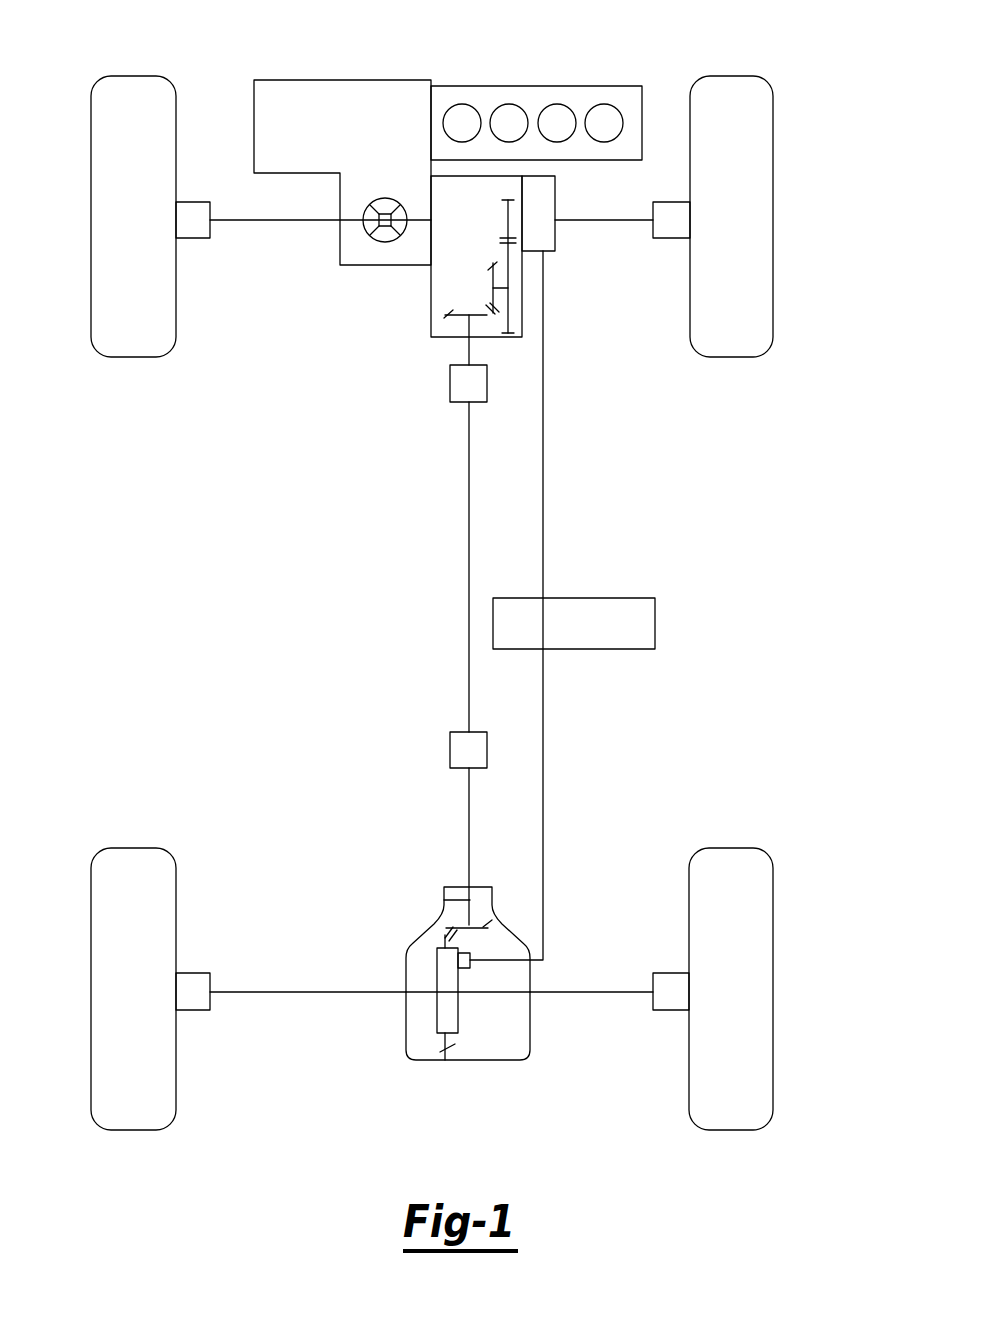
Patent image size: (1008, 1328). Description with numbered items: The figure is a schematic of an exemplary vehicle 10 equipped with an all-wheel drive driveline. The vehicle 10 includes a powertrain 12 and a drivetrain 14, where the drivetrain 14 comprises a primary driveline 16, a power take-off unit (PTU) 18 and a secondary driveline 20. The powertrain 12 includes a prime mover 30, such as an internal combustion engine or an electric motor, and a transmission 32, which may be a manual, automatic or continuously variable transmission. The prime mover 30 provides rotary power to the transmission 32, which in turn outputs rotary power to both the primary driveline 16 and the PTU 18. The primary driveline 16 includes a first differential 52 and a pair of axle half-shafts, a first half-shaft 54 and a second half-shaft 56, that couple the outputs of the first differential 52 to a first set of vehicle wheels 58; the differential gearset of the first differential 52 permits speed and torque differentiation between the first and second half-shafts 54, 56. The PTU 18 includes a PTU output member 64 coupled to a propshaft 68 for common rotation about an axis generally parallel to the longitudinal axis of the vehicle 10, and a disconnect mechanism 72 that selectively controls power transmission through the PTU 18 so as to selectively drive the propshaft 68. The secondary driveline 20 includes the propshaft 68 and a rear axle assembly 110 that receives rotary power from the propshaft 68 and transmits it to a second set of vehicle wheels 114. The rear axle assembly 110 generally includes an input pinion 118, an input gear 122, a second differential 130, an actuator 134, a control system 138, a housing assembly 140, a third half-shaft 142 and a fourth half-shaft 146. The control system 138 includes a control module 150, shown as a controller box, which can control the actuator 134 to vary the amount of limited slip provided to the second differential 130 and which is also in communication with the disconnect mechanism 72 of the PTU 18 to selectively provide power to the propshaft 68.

The vehicle 10 is at (784, 577).
The powertrain 12 is at (536, 60).
The drivetrain 14 is at (400, 568).
The primary driveline 16 is at (316, 272).
The power take-off unit (PTU) 18 is at (366, 332).
The secondary driveline 20 is at (358, 1077).
The prime mover 30 is at (468, 86).
The transmission 32 is at (300, 80).
The first differential 52 is at (380, 242).
The first half-shaft 54 is at (230, 220).
The second half-shaft 56 is at (633, 220).
The first set of vehicle wheels 58 is at (132, 357).
The PTU output member 64 is at (468, 353).
The propshaft 68 is at (468, 452).
The disconnect mechanism 72 is at (555, 242).
The rear axle assembly 110 is at (393, 965).
The second set of vehicle wheels 114 is at (135, 848).
The input pinion 118 is at (463, 900).
The input gear 122 is at (450, 1060).
The second differential 130 is at (437, 1003).
The actuator 134 is at (472, 957).
The control system 138 is at (639, 676).
The housing assembly 140 is at (530, 1038).
The third half-shaft 142 is at (243, 992).
The fourth half-shaft 146 is at (637, 992).
The control module 150 is at (613, 598).